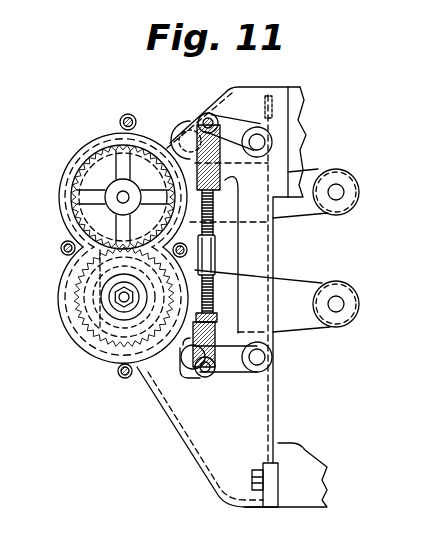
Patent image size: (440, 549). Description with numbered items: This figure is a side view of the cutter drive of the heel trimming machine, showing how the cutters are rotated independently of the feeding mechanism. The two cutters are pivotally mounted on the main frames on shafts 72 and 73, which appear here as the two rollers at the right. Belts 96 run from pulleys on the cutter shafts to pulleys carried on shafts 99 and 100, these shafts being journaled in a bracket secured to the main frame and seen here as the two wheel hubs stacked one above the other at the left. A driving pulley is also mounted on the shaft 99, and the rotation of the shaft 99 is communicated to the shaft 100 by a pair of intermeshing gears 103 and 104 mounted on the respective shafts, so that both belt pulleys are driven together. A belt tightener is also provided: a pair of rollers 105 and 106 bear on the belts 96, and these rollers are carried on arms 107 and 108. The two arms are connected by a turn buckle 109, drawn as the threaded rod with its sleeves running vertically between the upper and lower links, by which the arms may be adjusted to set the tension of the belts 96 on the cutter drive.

The shaft 72 is at (338, 191).
The shaft 73 is at (338, 304).
The belts 96 is at (310, 237).
The shaft 99 is at (110, 186).
The shaft 100 is at (116, 294).
The gear 103 is at (77, 211).
The gear 104 is at (78, 311).
The roller 105 is at (180, 374).
The roller 106 is at (176, 110).
The arm 107 is at (225, 336).
The arm 108 is at (230, 152).
The turn buckle 109 is at (208, 256).